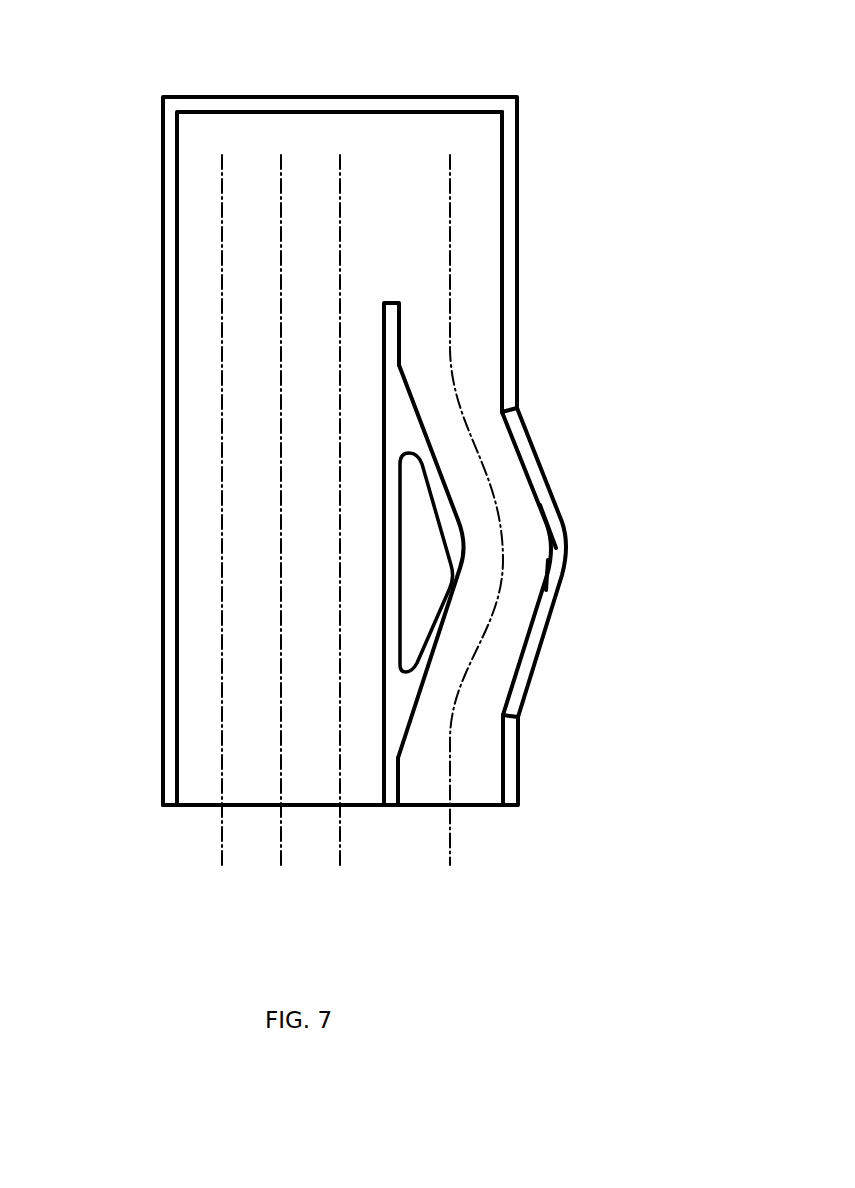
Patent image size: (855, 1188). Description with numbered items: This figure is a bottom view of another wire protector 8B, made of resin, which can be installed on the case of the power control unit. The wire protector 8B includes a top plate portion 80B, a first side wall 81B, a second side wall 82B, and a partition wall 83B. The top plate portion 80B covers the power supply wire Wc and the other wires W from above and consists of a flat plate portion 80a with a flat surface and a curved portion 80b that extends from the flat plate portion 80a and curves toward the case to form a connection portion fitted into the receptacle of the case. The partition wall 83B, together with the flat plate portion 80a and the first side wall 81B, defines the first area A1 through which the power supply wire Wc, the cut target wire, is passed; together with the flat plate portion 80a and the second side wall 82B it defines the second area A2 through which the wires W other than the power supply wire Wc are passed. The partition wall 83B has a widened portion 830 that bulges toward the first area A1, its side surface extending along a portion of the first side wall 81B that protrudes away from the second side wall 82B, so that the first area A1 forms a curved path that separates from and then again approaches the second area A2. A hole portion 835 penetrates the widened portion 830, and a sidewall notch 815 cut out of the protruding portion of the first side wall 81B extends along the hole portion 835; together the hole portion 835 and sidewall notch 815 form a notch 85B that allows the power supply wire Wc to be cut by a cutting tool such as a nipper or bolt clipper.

The wire protector 8B is at (150, 167).
The top plate portion 80B is at (607, 128).
The flat plate portion 80a is at (428, 407).
The curved portion 80b is at (468, 140).
The second side wall 82B is at (172, 432).
The notch 85B is at (680, 450).
The sidewall notch 815 is at (552, 522).
The hole portion 835 is at (423, 555).
The first side wall 81B is at (512, 747).
The partition wall 83B is at (393, 790).
The widened portion 830 is at (393, 555).
The first area A1 is at (500, 487).
The second area A2 is at (207, 541).
The wires W is at (348, 870).
The power supply wire Wc is at (471, 531).